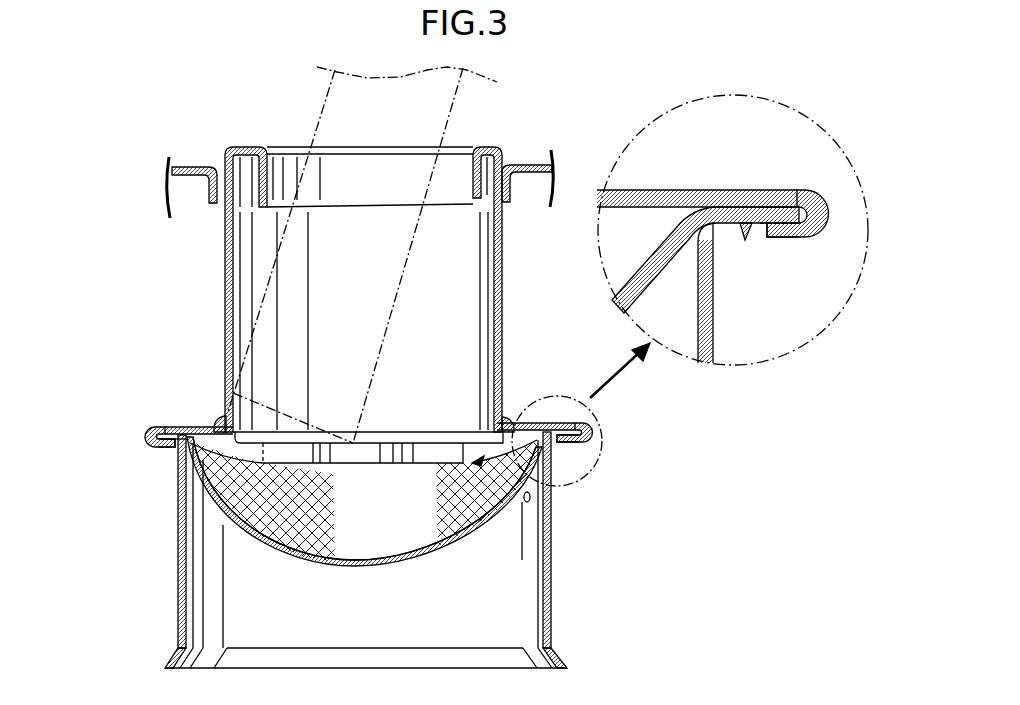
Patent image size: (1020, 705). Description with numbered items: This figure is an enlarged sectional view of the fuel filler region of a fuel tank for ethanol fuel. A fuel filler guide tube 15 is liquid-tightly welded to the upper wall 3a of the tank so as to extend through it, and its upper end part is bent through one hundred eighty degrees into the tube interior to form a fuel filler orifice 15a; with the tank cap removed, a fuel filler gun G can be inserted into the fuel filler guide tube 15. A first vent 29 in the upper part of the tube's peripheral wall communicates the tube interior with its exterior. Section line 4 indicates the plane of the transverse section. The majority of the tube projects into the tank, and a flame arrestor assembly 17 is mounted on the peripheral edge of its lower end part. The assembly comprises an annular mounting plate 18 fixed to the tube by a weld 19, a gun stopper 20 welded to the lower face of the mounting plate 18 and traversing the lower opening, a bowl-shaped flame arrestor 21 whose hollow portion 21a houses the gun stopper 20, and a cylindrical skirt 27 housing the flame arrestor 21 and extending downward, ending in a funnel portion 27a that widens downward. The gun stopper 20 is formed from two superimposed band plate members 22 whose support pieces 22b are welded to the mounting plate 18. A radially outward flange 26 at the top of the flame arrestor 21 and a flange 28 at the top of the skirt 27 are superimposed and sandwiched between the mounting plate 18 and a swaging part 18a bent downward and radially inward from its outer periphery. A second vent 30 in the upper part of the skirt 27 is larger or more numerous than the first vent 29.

The fuel filler gun G is at (318, 122).
The section line IV-IV 4 is at (125, 240).
The upper wall 3a is at (530, 166).
The fuel filler guide tube 15 is at (390, 266).
The fuel filler orifice 15a is at (472, 176).
The first vent 29 is at (505, 226).
The band plate member 22 is at (383, 446).
The support piece 22b is at (215, 413).
The weld 19 is at (513, 420).
The mounting plate 18 is at (465, 300).
The flange 26 is at (150, 430).
The flange 28 is at (157, 441).
The swaging part 18a is at (166, 448).
The flame arrestor 21 is at (485, 530).
The hollow portion 21a is at (379, 510).
The second vent 30 is at (470, 518).
The gun stopper 20 is at (528, 495).
The skirt 27 is at (553, 582).
The funnel portion 27a is at (560, 660).
The flame arrestor assembly 17 is at (660, 412).